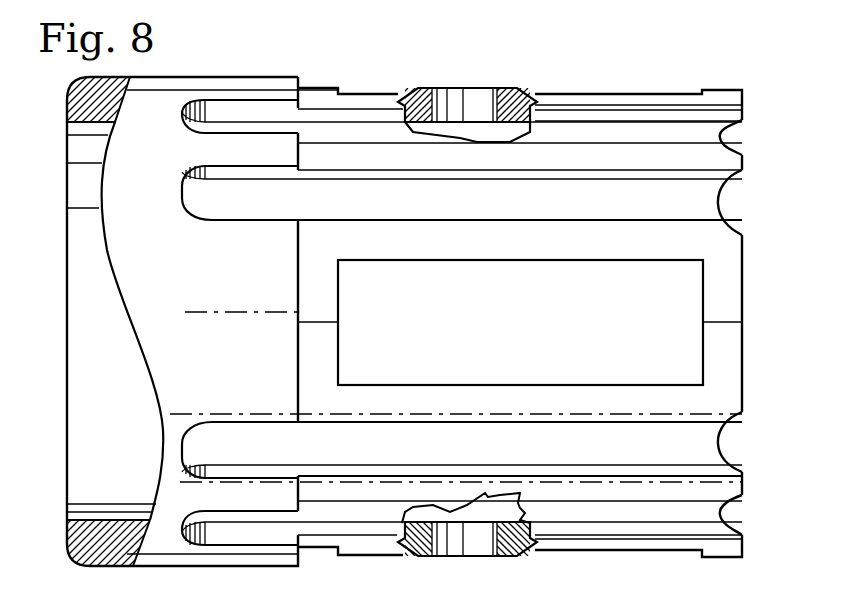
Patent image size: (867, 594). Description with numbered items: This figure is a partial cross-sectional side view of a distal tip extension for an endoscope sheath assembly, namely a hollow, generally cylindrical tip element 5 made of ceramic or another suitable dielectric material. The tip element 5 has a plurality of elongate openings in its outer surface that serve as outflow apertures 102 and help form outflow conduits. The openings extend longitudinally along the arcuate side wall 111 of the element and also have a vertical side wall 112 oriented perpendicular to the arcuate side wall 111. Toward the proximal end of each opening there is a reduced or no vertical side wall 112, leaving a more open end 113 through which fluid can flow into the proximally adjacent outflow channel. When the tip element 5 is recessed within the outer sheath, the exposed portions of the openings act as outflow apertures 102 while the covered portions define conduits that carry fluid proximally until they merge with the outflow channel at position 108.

The tip element 5 is at (484, 61).
The outflow aperture 102 is at (243, 108).
The position 108 is at (742, 172).
The arcuate side wall 111 is at (635, 221).
The vertical side wall 112 is at (250, 172).
The open end 113 is at (722, 207).